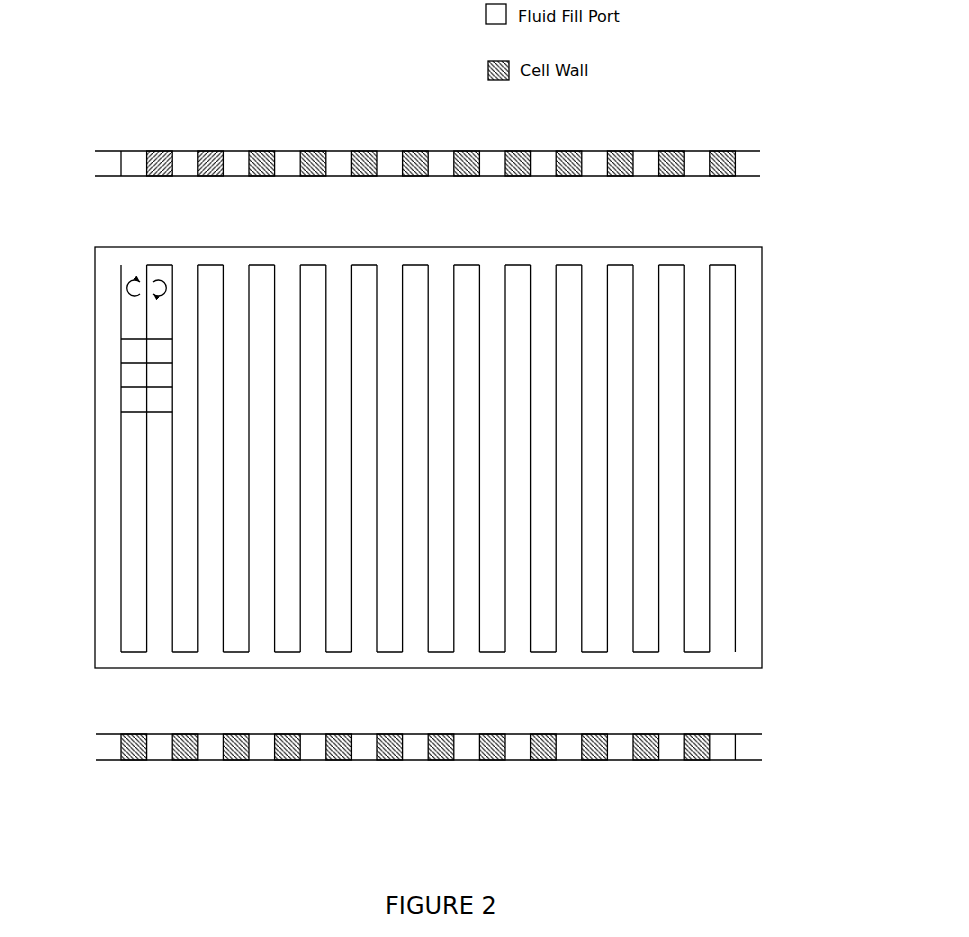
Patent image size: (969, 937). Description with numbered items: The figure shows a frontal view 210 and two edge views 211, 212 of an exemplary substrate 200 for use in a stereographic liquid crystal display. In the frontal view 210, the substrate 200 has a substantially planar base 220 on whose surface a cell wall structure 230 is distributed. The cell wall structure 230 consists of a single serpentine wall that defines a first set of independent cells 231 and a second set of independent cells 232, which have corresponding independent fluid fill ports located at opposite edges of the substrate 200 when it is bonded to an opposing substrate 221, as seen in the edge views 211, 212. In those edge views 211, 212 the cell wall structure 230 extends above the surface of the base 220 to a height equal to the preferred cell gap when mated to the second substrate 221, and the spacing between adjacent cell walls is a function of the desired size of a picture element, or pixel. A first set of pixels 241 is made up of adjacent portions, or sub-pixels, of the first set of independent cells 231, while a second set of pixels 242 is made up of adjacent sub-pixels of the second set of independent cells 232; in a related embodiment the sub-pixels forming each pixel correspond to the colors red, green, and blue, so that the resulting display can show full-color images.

The substrate 200 is at (762, 370).
The frontal view 210 is at (768, 247).
The edge view 211 is at (768, 151).
The edge view 212 is at (770, 734).
The base 220 is at (112, 150).
The opposing substrate 221 is at (113, 177).
The cell wall structure 230 is at (122, 176).
The first set of independent cells 231 is at (137, 157).
The second set of independent cells 232 is at (162, 645).
The first set of pixels 241 is at (133, 414).
The second set of pixels 242 is at (157, 414).